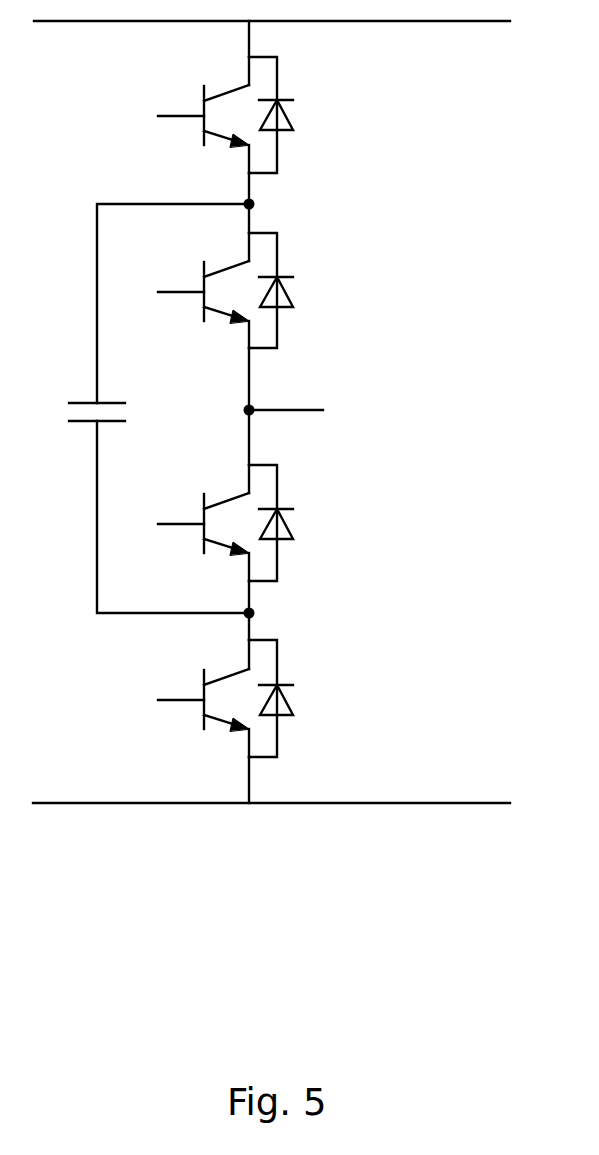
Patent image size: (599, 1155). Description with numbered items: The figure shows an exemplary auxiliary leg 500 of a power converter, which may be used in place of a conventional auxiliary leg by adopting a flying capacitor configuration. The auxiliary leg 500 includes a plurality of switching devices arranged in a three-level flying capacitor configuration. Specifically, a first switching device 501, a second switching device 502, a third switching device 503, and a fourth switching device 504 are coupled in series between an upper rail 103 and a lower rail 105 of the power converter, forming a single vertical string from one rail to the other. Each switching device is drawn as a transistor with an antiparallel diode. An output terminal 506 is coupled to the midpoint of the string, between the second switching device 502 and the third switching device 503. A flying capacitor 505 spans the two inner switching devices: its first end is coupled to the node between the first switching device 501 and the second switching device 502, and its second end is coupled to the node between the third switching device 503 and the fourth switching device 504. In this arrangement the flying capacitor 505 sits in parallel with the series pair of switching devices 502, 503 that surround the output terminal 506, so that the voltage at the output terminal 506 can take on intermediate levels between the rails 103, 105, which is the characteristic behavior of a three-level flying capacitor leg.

The rail 103 is at (414, 21).
The rail 105 is at (407, 803).
The auxiliary leg 500 is at (387, 497).
The first switching device 501 is at (277, 67).
The second switching device 502 is at (277, 247).
The third switching device 503 is at (277, 478).
The fourth switching device 504 is at (277, 652).
The flying capacitor 505 is at (97, 403).
The output terminal 506 is at (251, 408).